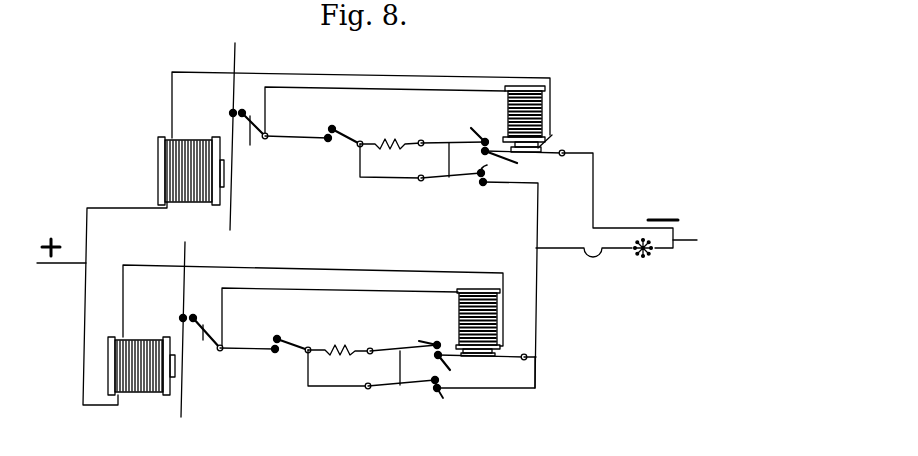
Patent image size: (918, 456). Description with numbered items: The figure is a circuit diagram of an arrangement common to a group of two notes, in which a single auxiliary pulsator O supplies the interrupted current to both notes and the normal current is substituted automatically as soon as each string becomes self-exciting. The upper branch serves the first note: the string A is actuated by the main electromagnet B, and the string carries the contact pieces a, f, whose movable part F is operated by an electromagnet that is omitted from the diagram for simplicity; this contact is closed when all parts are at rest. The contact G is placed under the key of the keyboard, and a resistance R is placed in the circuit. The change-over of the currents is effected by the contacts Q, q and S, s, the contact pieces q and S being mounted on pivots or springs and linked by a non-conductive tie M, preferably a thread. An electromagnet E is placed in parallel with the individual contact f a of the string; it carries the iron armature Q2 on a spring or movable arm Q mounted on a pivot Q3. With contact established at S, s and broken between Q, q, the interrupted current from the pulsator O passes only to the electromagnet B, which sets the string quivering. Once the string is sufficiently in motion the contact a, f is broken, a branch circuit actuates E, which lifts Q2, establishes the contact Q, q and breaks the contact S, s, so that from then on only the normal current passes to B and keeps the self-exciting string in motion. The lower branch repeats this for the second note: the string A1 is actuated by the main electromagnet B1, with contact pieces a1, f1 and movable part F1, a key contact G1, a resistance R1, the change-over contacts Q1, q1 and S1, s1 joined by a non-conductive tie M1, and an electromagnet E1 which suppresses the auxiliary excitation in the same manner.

The string A is at (224, 128).
The main electromagnet B is at (191, 160).
The contact piece of the string a is at (225, 109).
The contact piece of the string f is at (253, 116).
The movable part of the contact F is at (248, 140).
The key contact G is at (344, 130).
The resistance R is at (392, 131).
The change-over contact piece q is at (475, 129).
The non-conductive tie M is at (404, 162).
The change-over contact piece s is at (488, 165).
The change-over contact piece S is at (509, 284).
The movable arm Q is at (507, 162).
The iron armature Q2 is at (543, 135).
The pivot Q3 is at (616, 199).
The electromagnet E is at (515, 114).
The auxiliary pulsator device O is at (599, 262).
The string A1 is at (175, 325).
The main electromagnet B1 is at (141, 355).
The contact piece of the string a1 is at (173, 315).
The contact piece of the string f1 is at (206, 318).
The movable part of the contact F1 is at (200, 347).
The key contact G1 is at (291, 335).
The resistance R1 is at (340, 337).
The change-over contact piece q1 is at (430, 332).
The non-conductive tie M1 is at (354, 369).
The change-over contact piece s1 is at (426, 370).
The change-over contact piece S1 is at (485, 388).
The movable arm Q1 is at (486, 370).
The electromagnet E1 is at (468, 322).